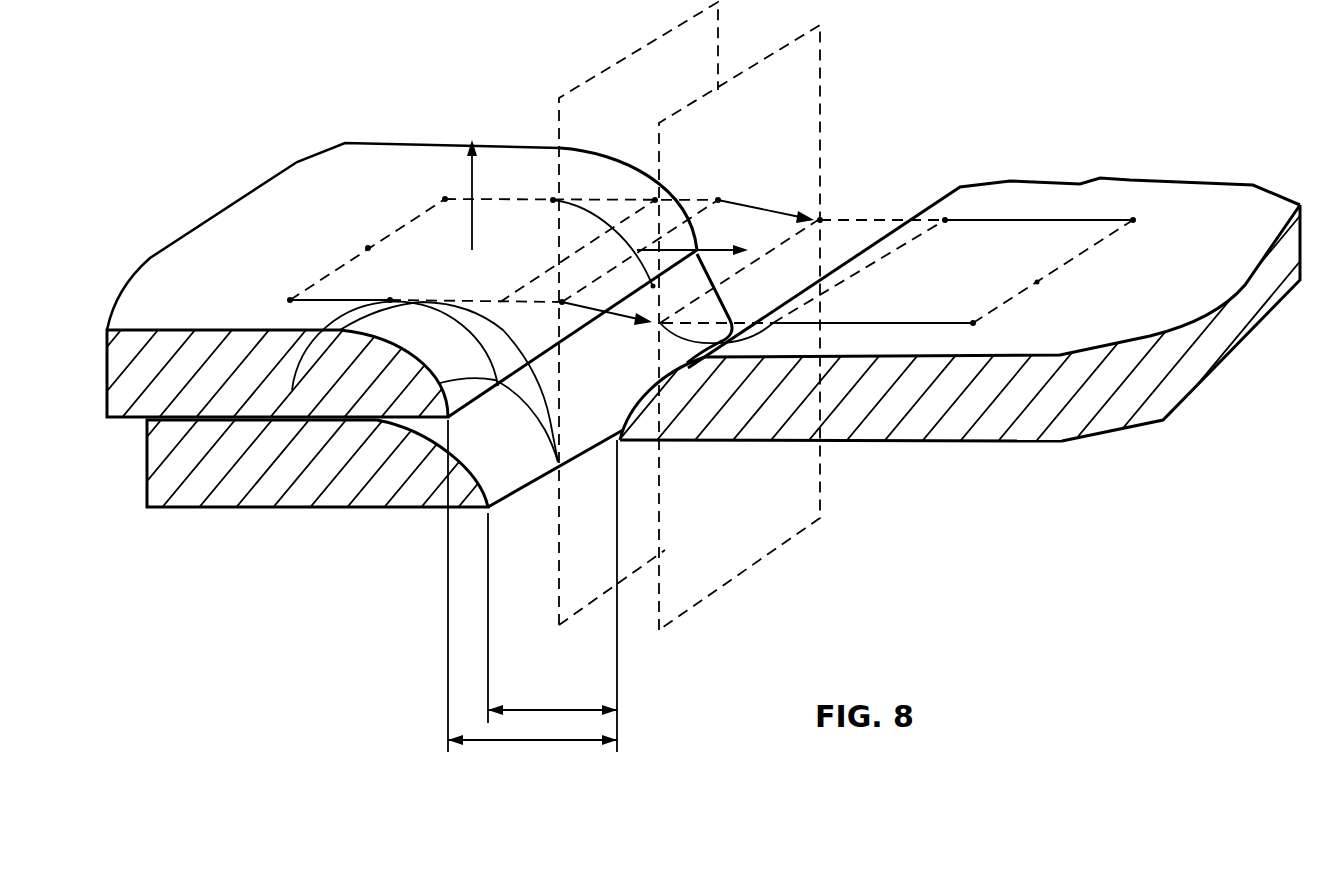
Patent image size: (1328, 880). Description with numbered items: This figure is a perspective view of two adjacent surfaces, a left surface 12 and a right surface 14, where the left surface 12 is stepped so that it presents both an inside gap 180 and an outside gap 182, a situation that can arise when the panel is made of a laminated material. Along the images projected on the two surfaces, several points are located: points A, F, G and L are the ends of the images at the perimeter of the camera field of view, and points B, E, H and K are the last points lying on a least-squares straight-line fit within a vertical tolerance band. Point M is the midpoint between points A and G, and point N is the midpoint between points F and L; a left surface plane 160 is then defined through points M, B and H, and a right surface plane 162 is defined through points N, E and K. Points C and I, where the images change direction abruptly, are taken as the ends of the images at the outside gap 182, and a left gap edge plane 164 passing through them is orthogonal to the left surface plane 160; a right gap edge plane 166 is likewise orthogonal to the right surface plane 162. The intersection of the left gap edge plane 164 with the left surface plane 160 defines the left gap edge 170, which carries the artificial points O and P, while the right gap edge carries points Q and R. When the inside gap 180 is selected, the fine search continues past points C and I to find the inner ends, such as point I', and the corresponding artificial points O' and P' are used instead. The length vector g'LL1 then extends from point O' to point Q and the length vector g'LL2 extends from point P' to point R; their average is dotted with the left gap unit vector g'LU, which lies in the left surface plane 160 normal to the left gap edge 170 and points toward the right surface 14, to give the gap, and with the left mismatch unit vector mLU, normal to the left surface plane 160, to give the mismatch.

The left surface 12 is at (235, 310).
The right surface 14 is at (1163, 297).
The left surface plane 160 is at (347, 145).
The right surface plane 162 is at (1027, 262).
The left gap edge plane 164 is at (625, 58).
The right gap edge plane 166 is at (820, 138).
The left gap edge 170 is at (587, 282).
The inside gap 180 is at (557, 710).
The outside gap 182 is at (520, 740).
The point A is at (441, 198).
The point B is at (553, 200).
The point C is at (653, 287).
The point E is at (945, 220).
The point F is at (1133, 220).
The point G is at (288, 298).
The point H is at (340, 330).
The point I is at (366, 449).
The point I' is at (456, 574).
The point K is at (773, 323).
The point L is at (973, 323).
The point M is at (368, 248).
The point N is at (1040, 283).
The point O is at (723, 130).
The point O' is at (739, 158).
The point P is at (330, 430).
The point P' is at (529, 319).
The point Q is at (822, 221).
The point R is at (653, 287).
The left mismatch unit vector mLU is at (440, 240).
The left gap length vector g'LL1 is at (875, 119).
The left gap length vector g'LL2 is at (411, 468).
The left gap unit vector g'LU is at (785, 275).